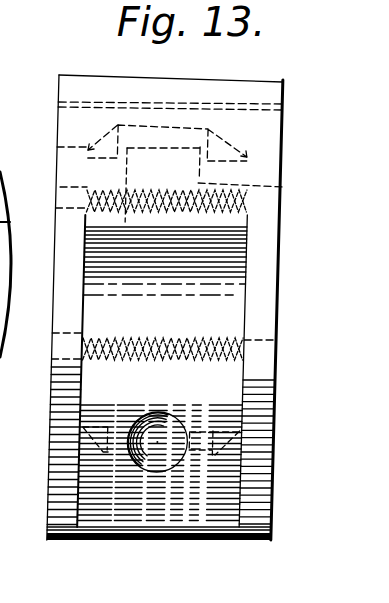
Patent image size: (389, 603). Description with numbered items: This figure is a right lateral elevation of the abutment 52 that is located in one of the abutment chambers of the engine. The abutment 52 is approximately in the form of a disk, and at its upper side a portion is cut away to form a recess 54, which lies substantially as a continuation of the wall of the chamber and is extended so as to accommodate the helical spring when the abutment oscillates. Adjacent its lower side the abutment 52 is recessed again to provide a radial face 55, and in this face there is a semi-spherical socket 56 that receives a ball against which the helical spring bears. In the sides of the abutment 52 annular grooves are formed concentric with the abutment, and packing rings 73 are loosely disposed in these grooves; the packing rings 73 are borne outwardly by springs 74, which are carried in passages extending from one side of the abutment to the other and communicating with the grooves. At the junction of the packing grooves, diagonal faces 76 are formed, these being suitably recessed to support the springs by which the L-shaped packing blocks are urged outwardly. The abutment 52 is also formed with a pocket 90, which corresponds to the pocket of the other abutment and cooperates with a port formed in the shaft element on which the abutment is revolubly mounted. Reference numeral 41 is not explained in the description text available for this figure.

The housing wall 41 is at (277, 511).
The abutment 52 is at (64, 505).
The recess 54 is at (81, 123).
The radial face 55 is at (143, 510).
The semi-spherical socket 56 is at (175, 460).
The packing rings 73 is at (61, 204).
The springs 74 is at (242, 212).
The diagonal faces 76 is at (251, 150).
The pocket 90 is at (286, 187).